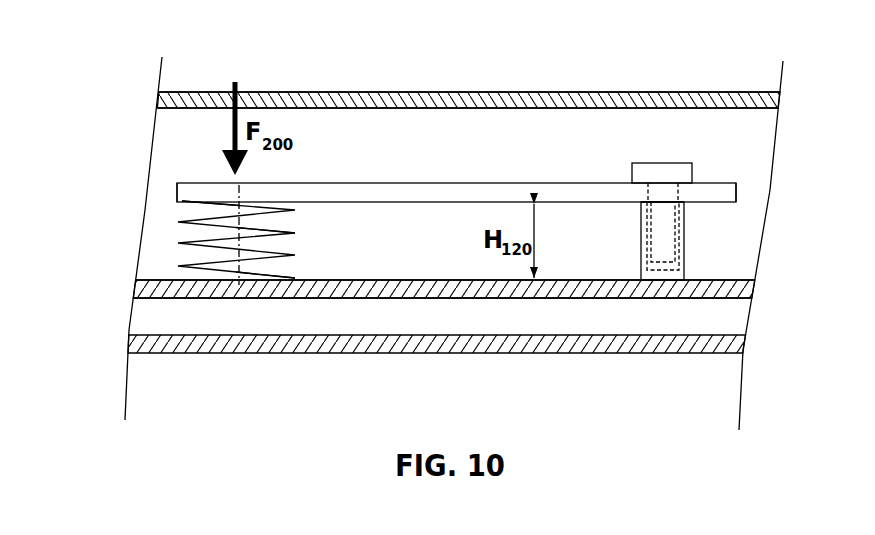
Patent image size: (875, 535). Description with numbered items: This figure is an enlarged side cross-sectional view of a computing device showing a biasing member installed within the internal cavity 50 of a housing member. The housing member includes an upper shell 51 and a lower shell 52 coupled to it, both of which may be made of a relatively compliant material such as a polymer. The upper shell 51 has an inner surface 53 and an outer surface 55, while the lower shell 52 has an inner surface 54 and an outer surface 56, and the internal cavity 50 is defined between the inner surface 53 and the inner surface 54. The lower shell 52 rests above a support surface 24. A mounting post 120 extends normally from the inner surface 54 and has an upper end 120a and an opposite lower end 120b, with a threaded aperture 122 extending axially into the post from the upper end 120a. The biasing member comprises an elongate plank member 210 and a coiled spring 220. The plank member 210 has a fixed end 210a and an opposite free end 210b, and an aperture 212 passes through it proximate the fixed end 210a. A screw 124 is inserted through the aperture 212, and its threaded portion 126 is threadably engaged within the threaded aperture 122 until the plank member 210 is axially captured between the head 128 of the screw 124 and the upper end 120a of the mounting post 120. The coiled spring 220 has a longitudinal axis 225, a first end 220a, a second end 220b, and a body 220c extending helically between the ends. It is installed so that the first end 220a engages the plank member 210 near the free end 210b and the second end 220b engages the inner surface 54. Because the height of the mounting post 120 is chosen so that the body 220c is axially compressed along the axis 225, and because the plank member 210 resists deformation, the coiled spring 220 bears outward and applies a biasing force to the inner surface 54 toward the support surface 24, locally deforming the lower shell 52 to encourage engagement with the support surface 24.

The support surface 24 is at (578, 334).
The internal cavity 50 is at (313, 125).
The upper shell 51 is at (372, 90).
The lower shell 52 is at (450, 300).
The inner surface of upper shell 53 is at (405, 103).
The inner surface of lower shell 54 is at (385, 280).
The outer surface of upper shell 55 is at (472, 92).
The outer surface of lower shell 56 is at (356, 300).
The mounting post 120 is at (686, 226).
The upper end of mounting post 120a is at (688, 198).
The lower end of mounting post 120b is at (690, 277).
The threaded aperture 122 is at (646, 250).
The screw 124 is at (632, 197).
The threaded portion of screw 126 is at (648, 231).
The head of screw 128 is at (655, 163).
The plank member 210 is at (440, 182).
The fixed end of plank member 210a is at (738, 192).
The free end of plank member 210b is at (175, 193).
The aperture 212 is at (647, 192).
The coiled spring 220 is at (177, 240).
The first end of coiled spring 220a is at (206, 196).
The second end of coiled spring 220b is at (262, 284).
The body of coiled spring 220c is at (278, 231).
The longitudinal axis of coiled spring 225 is at (244, 222).